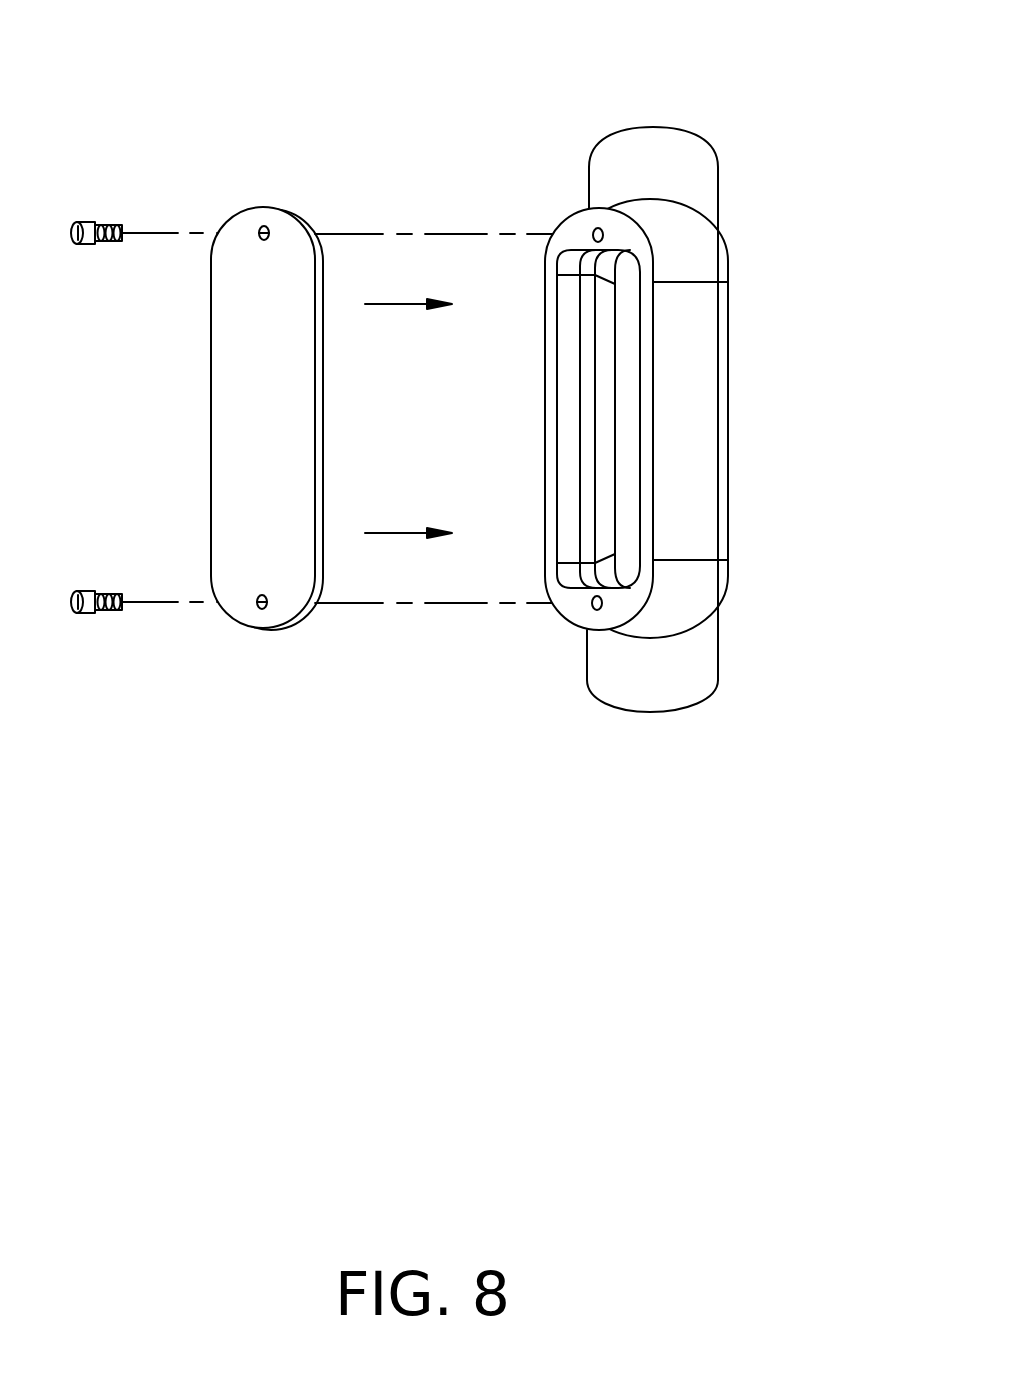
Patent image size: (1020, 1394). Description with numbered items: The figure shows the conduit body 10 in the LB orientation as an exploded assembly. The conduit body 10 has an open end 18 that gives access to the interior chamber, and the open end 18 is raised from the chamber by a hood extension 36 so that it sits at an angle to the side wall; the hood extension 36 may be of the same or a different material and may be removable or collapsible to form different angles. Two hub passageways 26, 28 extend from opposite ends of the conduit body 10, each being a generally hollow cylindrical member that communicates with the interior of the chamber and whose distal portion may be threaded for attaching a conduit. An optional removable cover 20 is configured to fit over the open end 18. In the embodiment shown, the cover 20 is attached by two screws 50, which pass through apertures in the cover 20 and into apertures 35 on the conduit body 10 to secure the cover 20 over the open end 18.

The conduit body 10 is at (674, 421).
The open end 18 is at (590, 447).
The removable cover 20 is at (260, 445).
The hub passageway 26 is at (648, 715).
The hub passageway 28 is at (650, 127).
The apertures 35 is at (593, 233).
The hood extension 36 is at (695, 448).
The screws 50 is at (100, 222).